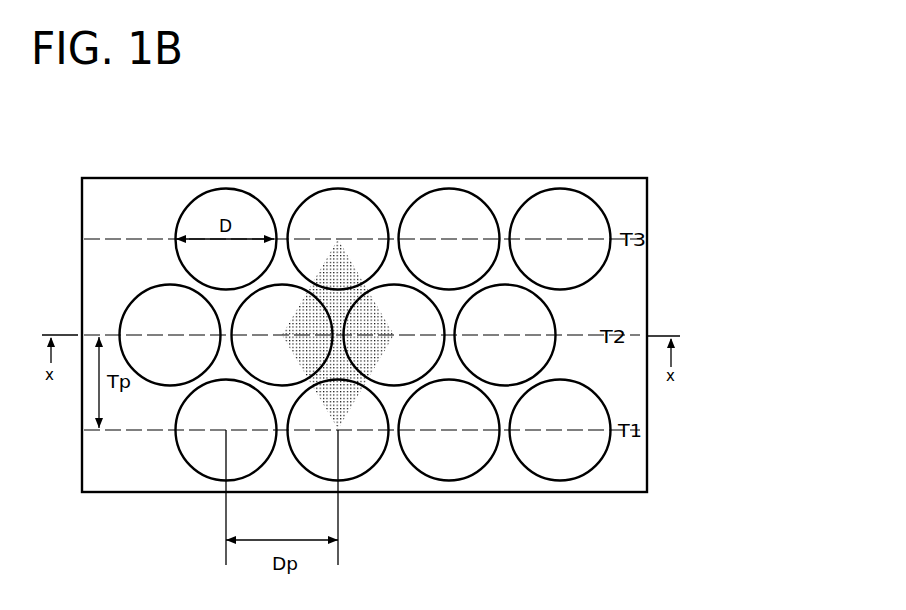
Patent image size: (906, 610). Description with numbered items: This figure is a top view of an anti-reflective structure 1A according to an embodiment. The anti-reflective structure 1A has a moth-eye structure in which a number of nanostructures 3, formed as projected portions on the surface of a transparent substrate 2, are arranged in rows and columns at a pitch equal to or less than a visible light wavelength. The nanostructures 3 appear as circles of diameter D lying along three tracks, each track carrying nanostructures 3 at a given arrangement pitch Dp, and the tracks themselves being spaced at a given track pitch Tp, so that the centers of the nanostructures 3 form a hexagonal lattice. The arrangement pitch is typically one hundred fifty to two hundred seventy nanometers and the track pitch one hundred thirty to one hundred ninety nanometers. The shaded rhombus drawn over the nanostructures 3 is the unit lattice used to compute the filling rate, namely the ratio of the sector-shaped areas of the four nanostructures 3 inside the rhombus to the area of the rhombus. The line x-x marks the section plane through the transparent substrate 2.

The anti-reflective structure 1A is at (398, 328).
The transparent substrate 2 is at (623, 190).
The nanostructures 3 is at (562, 205).